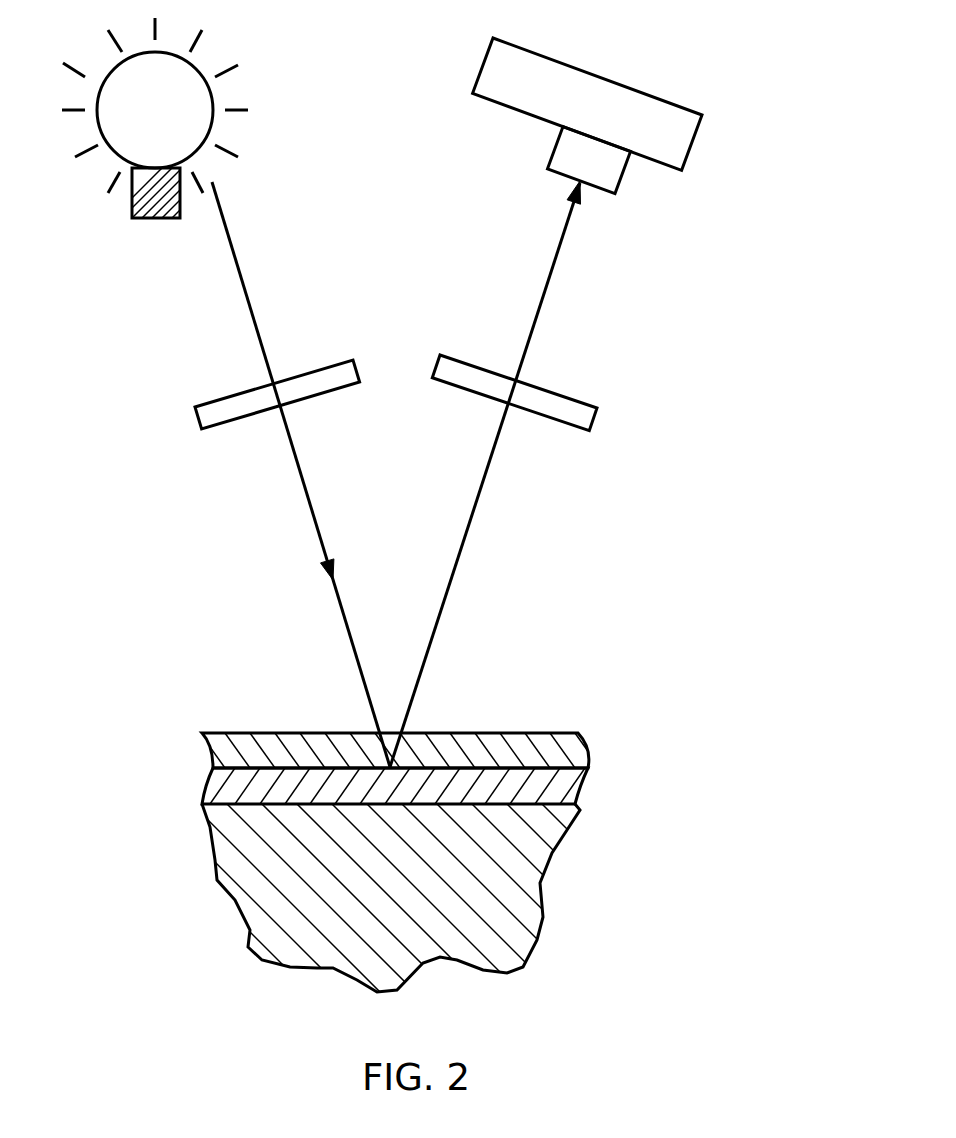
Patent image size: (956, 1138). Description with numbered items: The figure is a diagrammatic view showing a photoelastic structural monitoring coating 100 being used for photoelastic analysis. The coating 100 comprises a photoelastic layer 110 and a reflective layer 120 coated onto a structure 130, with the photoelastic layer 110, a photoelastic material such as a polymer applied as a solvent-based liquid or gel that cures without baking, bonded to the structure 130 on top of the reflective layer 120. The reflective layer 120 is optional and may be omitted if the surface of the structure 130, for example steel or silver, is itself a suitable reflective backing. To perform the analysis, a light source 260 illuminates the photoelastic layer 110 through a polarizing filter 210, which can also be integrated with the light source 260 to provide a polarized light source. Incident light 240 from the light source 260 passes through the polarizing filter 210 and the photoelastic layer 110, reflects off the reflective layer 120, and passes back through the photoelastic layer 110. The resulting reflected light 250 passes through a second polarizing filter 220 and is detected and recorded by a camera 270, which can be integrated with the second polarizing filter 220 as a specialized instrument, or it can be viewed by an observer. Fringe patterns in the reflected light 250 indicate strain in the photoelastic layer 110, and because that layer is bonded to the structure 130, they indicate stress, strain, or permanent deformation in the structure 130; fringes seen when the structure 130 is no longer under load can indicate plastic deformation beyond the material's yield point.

The photoelastic structural monitoring coating 100 is at (379, 782).
The photoelastic layer 110 is at (588, 740).
The reflective layer 120 is at (587, 782).
The structure 130 is at (547, 883).
The polarizing filter 210 is at (195, 413).
The second polarizing filter 220 is at (598, 412).
The incident light 240 is at (247, 307).
The reflected light 250 is at (543, 298).
The light source 260 is at (215, 97).
The camera 270 is at (687, 158).